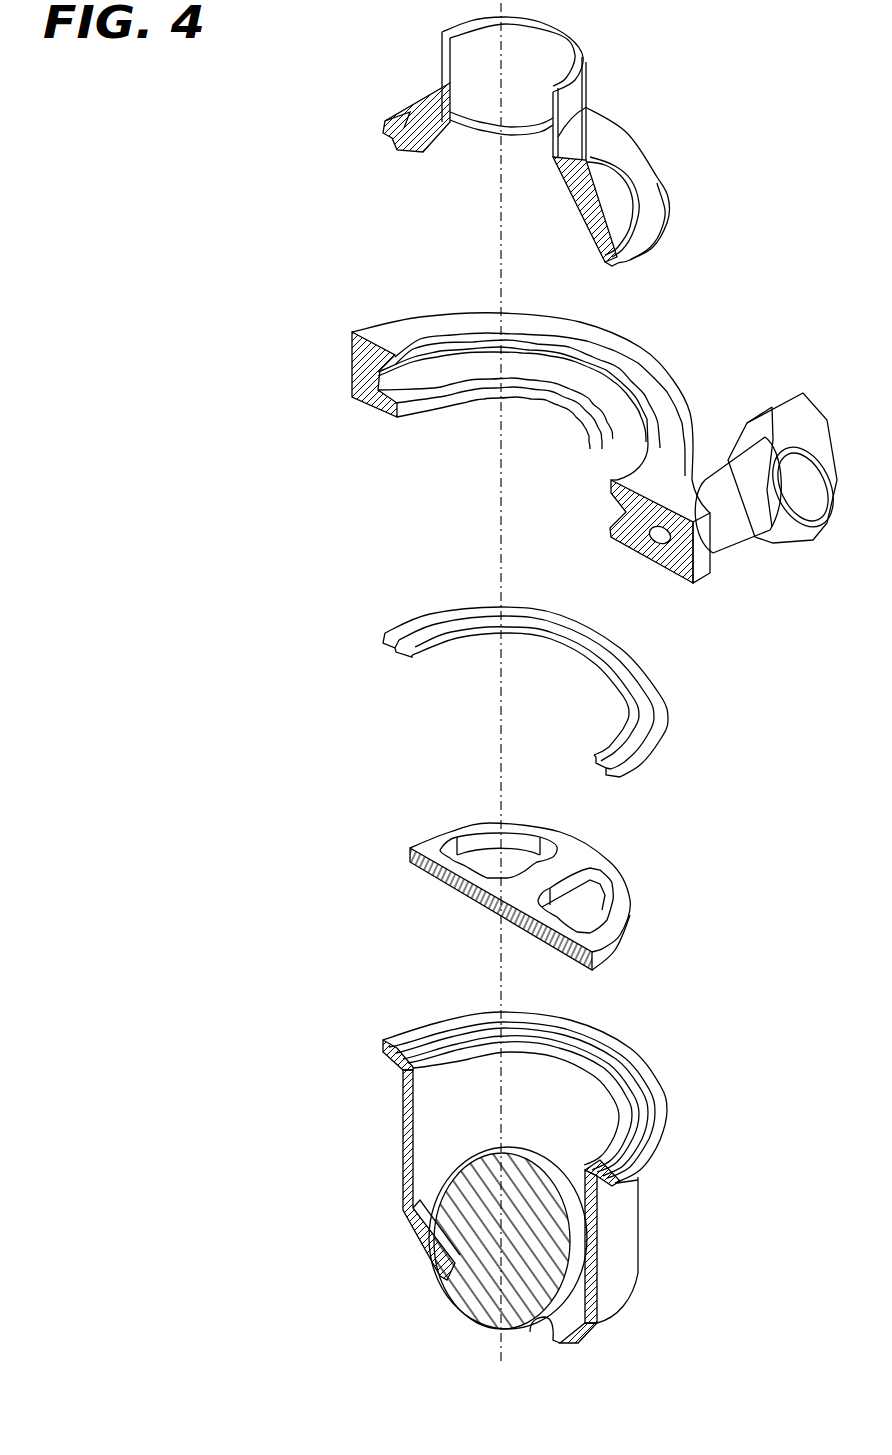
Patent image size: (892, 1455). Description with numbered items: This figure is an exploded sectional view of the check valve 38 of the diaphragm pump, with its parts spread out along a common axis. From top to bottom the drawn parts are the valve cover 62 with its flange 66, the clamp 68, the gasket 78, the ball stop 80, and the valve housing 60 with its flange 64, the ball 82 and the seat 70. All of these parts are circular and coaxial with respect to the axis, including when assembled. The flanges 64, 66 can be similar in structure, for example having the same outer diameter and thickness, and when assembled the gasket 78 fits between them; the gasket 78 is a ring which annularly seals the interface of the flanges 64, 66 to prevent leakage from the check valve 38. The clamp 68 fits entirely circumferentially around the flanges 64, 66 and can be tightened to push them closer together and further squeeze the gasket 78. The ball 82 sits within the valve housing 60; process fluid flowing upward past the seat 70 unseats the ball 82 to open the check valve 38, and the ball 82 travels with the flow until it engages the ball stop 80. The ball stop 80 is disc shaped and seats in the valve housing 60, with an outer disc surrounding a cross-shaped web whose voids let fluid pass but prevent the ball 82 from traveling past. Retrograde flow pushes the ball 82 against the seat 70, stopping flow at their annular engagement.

The check valve 38 is at (190, 683).
The valve housing 60 is at (652, 1255).
The valve cover 62 is at (630, 98).
The flange 64 is at (669, 1108).
The flange 66 is at (672, 190).
The clamp 68 is at (688, 368).
The seat 70 is at (536, 1348).
The gasket 78 is at (669, 700).
The ball stop 80 is at (631, 911).
The ball 82 is at (457, 1168).